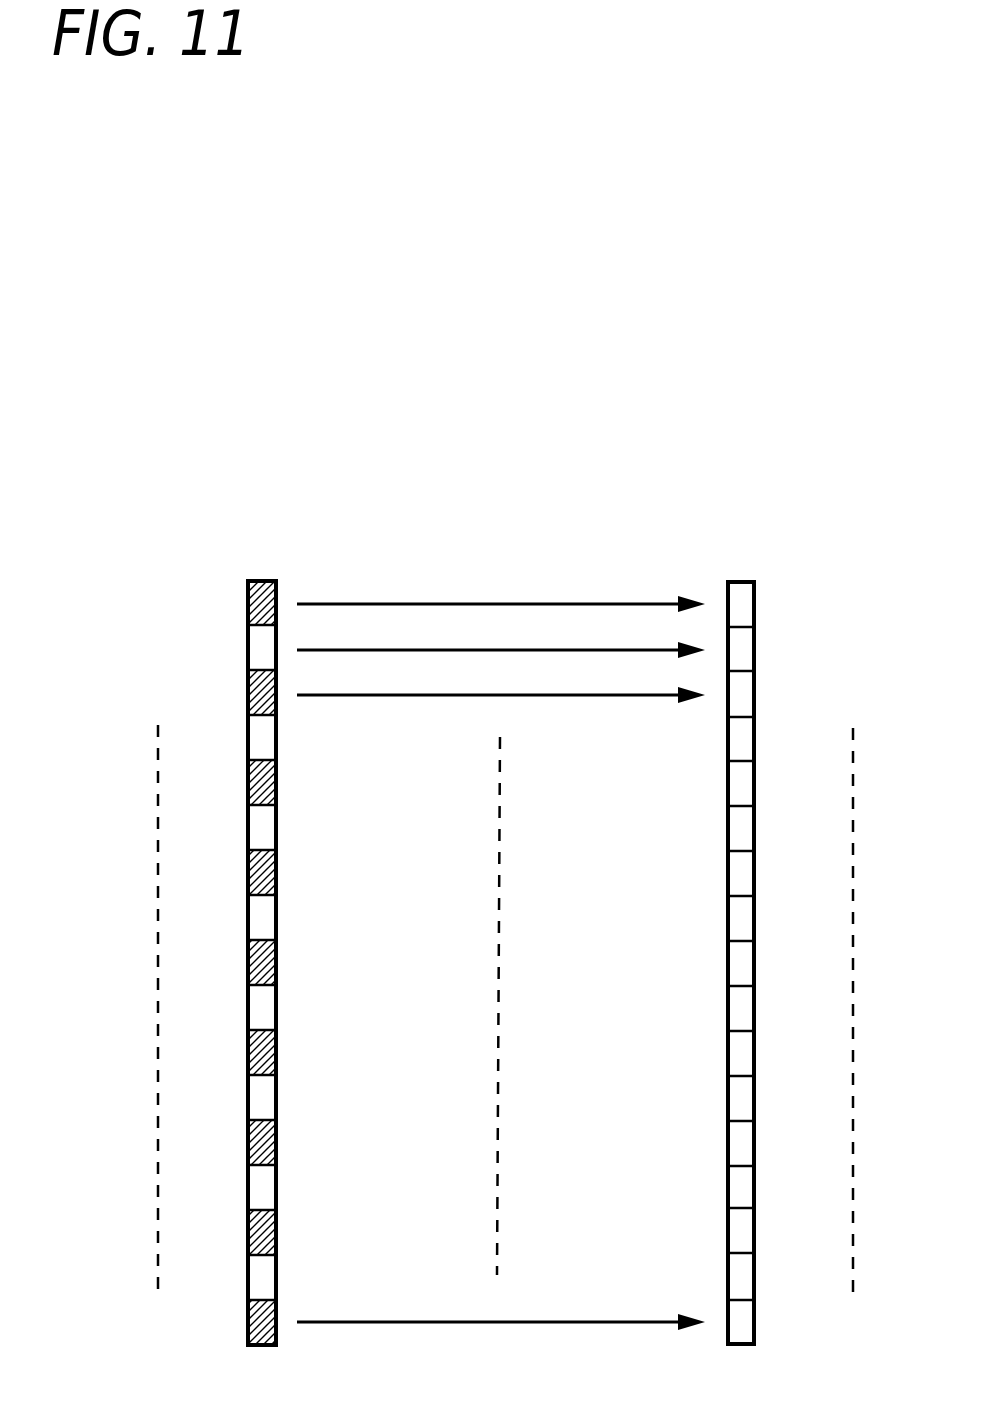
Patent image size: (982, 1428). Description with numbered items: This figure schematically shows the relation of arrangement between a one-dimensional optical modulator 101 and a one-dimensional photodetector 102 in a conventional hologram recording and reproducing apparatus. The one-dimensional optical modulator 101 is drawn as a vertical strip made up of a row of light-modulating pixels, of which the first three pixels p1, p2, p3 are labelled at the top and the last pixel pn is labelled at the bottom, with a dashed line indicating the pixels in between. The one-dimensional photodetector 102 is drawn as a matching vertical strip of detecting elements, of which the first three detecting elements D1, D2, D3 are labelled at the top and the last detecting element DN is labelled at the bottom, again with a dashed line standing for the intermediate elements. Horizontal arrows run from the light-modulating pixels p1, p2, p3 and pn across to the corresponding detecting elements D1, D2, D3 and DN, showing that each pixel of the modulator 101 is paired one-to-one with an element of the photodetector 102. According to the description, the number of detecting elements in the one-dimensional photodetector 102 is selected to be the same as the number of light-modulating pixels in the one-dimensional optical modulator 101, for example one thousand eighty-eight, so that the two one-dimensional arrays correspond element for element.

The one-dimensional optical modulator 101 is at (262, 580).
The one-dimensional photodetector 102 is at (741, 580).
The light-modulating pixel p1 is at (248, 600).
The light-modulating pixel p2 is at (248, 646).
The light-modulating pixel p3 is at (248, 693).
The light-modulating pixel pn is at (248, 1318).
The detecting element D1 is at (755, 597).
The detecting element D2 is at (755, 643).
The detecting element D3 is at (755, 690).
The detecting element DN is at (755, 1320).